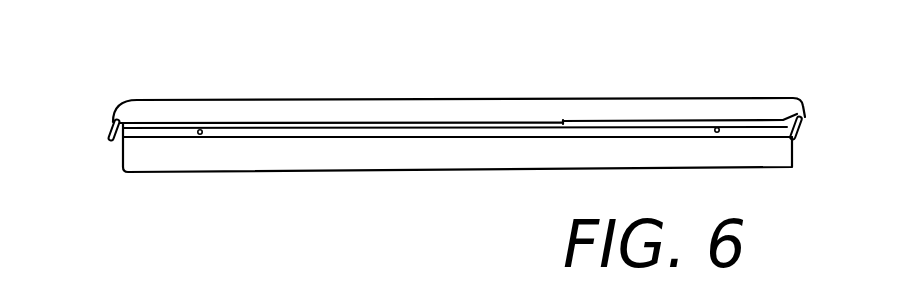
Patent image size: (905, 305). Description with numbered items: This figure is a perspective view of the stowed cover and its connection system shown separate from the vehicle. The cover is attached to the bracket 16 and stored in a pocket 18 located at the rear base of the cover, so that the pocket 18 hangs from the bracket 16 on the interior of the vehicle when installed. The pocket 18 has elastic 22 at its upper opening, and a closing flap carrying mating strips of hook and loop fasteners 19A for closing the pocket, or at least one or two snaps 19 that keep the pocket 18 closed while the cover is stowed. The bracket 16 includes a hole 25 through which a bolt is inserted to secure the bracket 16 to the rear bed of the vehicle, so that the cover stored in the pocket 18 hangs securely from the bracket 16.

The bracket 16 is at (803, 127).
The pocket 18 is at (528, 150).
The snaps 19 is at (201, 130).
The hook and loop fasteners 19A is at (160, 140).
The elastic 22 is at (380, 130).
The hole 25 is at (110, 137).